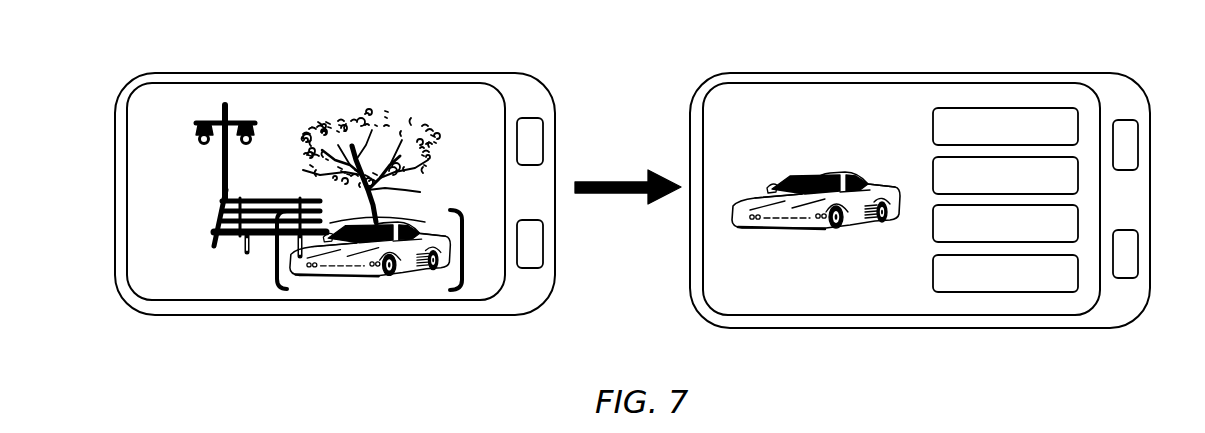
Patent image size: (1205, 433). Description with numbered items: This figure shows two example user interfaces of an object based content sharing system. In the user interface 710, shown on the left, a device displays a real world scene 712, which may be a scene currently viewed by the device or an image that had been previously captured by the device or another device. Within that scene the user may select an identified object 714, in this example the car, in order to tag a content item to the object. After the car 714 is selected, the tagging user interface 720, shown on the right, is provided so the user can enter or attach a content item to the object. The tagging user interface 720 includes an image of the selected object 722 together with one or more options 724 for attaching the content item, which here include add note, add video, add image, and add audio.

The user interface 710 is at (309, 225).
The real world scene 712 is at (150, 131).
The identified object 714 is at (278, 293).
The tagging user interface 720 is at (894, 200).
The image of the selected object 722 is at (725, 129).
The options for attaching the content item 724 is at (1012, 108).